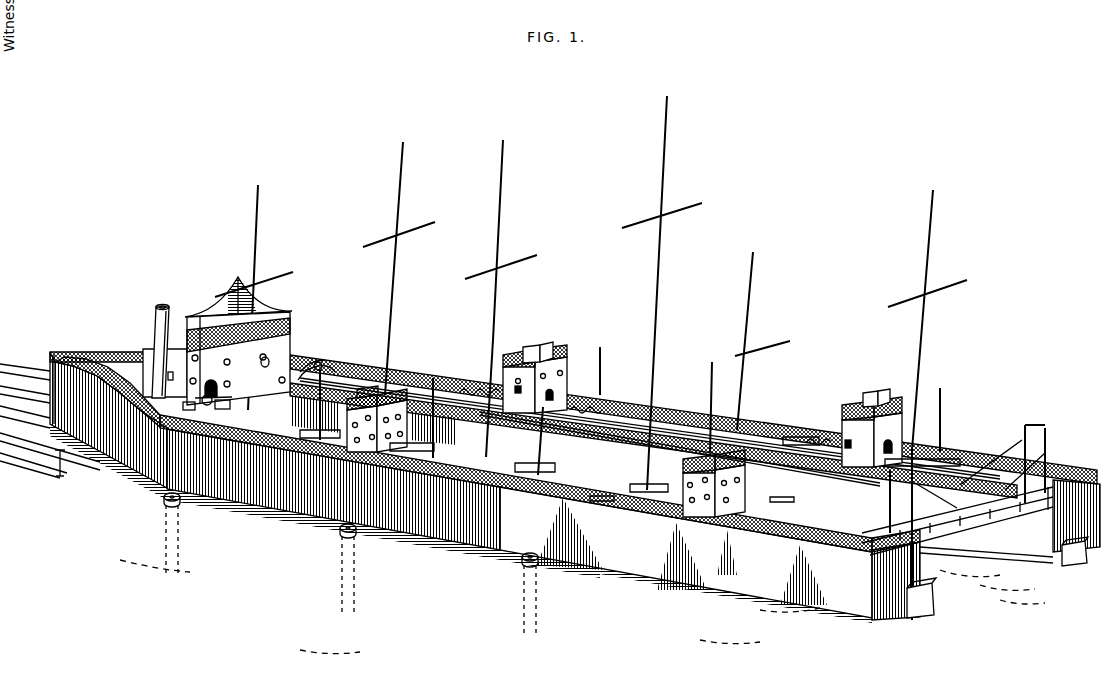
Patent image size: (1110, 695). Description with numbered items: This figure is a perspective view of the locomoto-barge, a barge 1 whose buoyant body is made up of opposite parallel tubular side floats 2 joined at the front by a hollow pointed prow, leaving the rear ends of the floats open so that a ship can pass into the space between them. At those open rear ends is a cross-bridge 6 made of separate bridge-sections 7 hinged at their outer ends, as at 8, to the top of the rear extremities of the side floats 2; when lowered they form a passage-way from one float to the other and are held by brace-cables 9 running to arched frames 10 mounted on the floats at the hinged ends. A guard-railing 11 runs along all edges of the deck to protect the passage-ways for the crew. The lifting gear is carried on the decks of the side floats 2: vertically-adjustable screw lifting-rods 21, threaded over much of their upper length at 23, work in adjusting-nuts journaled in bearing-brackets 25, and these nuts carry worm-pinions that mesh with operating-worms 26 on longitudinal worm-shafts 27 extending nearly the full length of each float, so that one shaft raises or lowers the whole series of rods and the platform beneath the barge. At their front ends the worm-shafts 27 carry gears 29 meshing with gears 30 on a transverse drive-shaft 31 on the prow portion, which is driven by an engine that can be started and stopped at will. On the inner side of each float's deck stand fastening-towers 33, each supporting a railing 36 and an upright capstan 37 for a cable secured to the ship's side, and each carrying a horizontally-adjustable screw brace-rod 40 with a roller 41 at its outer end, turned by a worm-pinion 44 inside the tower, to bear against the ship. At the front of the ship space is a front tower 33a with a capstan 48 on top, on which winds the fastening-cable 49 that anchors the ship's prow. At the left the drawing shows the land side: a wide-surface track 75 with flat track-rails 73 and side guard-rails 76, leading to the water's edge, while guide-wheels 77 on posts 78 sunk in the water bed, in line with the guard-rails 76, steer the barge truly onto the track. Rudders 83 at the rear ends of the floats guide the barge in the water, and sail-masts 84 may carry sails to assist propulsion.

The barge 1 is at (693, 419).
The tubular side floats 2 is at (575, 487).
The cross-bridge 6 is at (957, 515).
The bridge-sections 7 is at (956, 522).
The hinges of the bridge-sections 8 is at (1046, 506).
The brace-cables 9 is at (1050, 454).
The arched frames 10 is at (1040, 429).
The guard-railing 11 is at (100, 356).
The screw lifting-rods 21 is at (491, 347).
The threaded portions of the lifting-rods 23 is at (952, 413).
The bearing-brackets 25 is at (788, 484).
The operating-worms 26 is at (322, 428).
The longitudinal worm-shafts 27 is at (360, 375).
The gears on the worm-shafts 29 is at (186, 405).
The gears of the drive-shaft 30 is at (200, 400).
The drive-shaft 31 is at (222, 409).
The fastening-towers 33 is at (635, 456).
The front tower 33a is at (300, 360).
The railing 36 is at (555, 451).
The upright capstan 37 is at (548, 347).
The screw brace-rod 40 is at (518, 393).
The roller 41 is at (852, 451).
The worm-pinion 44 is at (520, 348).
The capstan of the front tower 48 is at (262, 314).
The fastening-cable 49 is at (275, 362).
The flat track-rails 73 is at (62, 477).
The wide-surface track 75 is at (50, 426).
The side guard-rails 76 is at (18, 362).
The guide-wheels 77 is at (165, 502).
The posts 78 is at (166, 540).
The rudders 83 is at (934, 599).
The sail-masts 84 is at (664, 291).